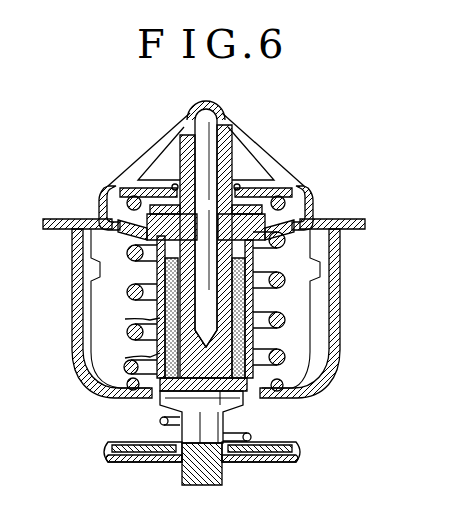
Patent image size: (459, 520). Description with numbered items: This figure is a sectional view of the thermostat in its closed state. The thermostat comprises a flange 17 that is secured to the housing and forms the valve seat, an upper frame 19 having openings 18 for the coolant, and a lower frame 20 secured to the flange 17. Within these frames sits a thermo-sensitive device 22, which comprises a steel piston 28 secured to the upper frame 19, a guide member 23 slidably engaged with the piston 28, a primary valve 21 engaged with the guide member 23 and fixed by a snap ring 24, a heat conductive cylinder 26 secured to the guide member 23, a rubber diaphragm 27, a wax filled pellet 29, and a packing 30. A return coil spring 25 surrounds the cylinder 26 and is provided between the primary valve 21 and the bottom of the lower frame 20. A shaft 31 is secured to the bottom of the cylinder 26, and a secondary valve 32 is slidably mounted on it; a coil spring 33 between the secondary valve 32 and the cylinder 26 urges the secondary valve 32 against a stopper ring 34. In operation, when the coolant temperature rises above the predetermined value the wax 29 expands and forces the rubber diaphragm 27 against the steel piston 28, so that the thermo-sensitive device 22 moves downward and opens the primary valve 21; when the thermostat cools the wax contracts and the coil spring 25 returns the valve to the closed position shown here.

The flange 17 is at (100, 217).
The openings 18 is at (158, 150).
The upper frame 19 is at (162, 172).
The lower frame 20 is at (340, 252).
The primary valve 21 is at (118, 222).
The thermo-sensitive device 22 is at (258, 303).
The guide member 23 is at (233, 170).
The snap ring 24 is at (245, 190).
The return coil spring 25 is at (310, 375).
The heat conductive cylinder 26 is at (255, 335).
The rubber diaphragm 27 is at (129, 320).
The steel piston 28 is at (195, 118).
The wax filled pellet 29 is at (129, 360).
The packing 30 is at (285, 215).
The shaft 31 is at (186, 465).
The secondary valve 32 is at (122, 463).
The coil spring 33 is at (252, 437).
The stopper ring 34 is at (226, 458).